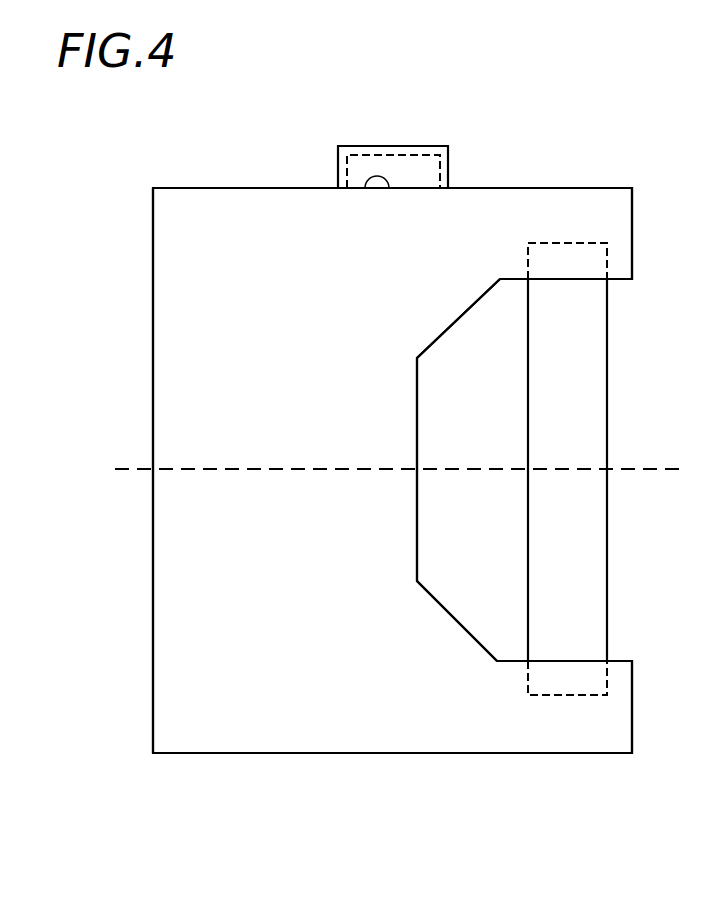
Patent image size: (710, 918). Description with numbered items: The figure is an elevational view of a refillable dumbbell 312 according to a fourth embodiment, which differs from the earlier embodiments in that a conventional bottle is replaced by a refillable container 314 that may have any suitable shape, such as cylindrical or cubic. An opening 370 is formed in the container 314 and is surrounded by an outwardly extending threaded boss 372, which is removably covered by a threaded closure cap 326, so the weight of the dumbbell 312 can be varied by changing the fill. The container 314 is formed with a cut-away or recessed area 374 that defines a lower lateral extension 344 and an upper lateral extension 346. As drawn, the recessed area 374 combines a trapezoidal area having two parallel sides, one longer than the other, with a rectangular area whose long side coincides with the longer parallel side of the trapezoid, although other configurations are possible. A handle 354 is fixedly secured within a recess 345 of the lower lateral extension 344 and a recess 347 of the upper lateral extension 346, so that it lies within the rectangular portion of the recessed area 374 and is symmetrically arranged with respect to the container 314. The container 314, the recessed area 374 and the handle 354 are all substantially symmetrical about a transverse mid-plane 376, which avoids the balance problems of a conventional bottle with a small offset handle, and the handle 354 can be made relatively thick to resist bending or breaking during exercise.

The refillable dumbbell 312 is at (266, 157).
The refillable container 314 is at (153, 520).
The threaded closure cap 326 is at (422, 147).
The threaded boss 372 is at (361, 155).
The opening 370 is at (370, 188).
The upper lateral extension 346 is at (577, 205).
The lower lateral extension 344 is at (582, 733).
The handle 354 is at (597, 444).
The recess 347 is at (607, 270).
The recess 345 is at (607, 678).
The recessed area 374 is at (476, 581).
The transverse mid-plane 376 is at (293, 468).